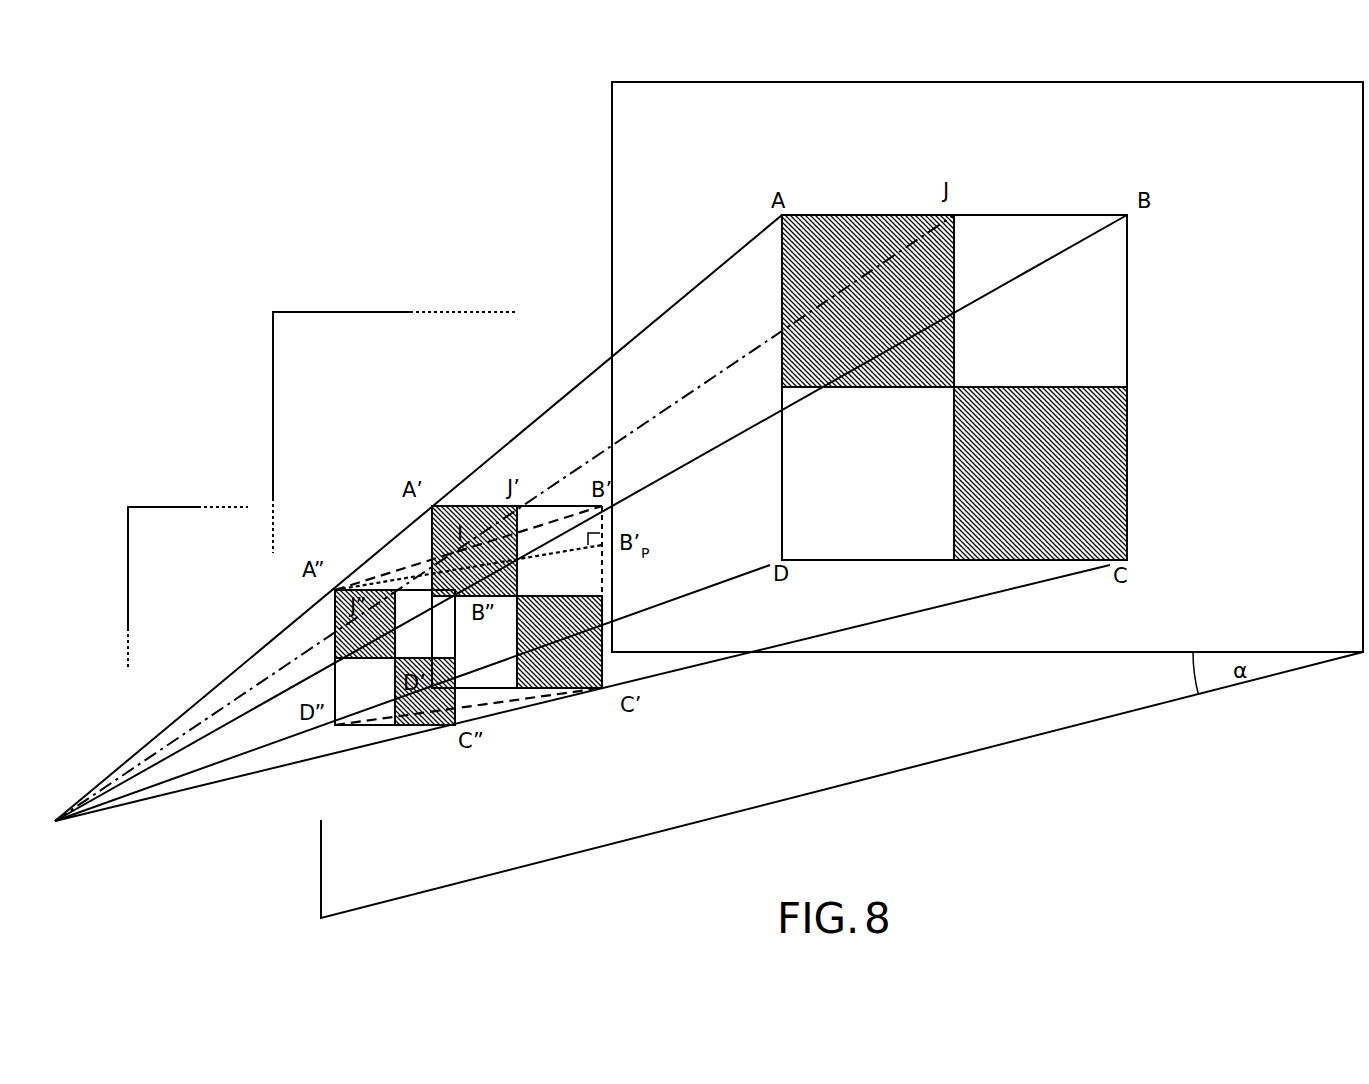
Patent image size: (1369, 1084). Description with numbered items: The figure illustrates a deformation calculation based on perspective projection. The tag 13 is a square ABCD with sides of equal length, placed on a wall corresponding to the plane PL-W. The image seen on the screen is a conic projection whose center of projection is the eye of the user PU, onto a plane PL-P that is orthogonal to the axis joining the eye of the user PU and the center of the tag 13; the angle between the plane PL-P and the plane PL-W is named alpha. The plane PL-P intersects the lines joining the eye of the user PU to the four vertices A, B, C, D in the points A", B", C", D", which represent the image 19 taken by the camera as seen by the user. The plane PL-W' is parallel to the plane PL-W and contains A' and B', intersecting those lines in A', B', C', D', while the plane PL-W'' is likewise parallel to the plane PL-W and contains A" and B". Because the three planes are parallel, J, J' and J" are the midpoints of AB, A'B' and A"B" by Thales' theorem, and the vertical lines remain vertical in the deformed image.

The tag 13 is at (1132, 307).
The image 19 is at (367, 729).
The wall plane PL-W is at (987, 367).
The first parallel plane PL-W' is at (394, 432).
The second parallel plane PL-W'' is at (188, 587).
The projection plane PL-P is at (842, 785).
The eye of the user PU is at (574, 535).